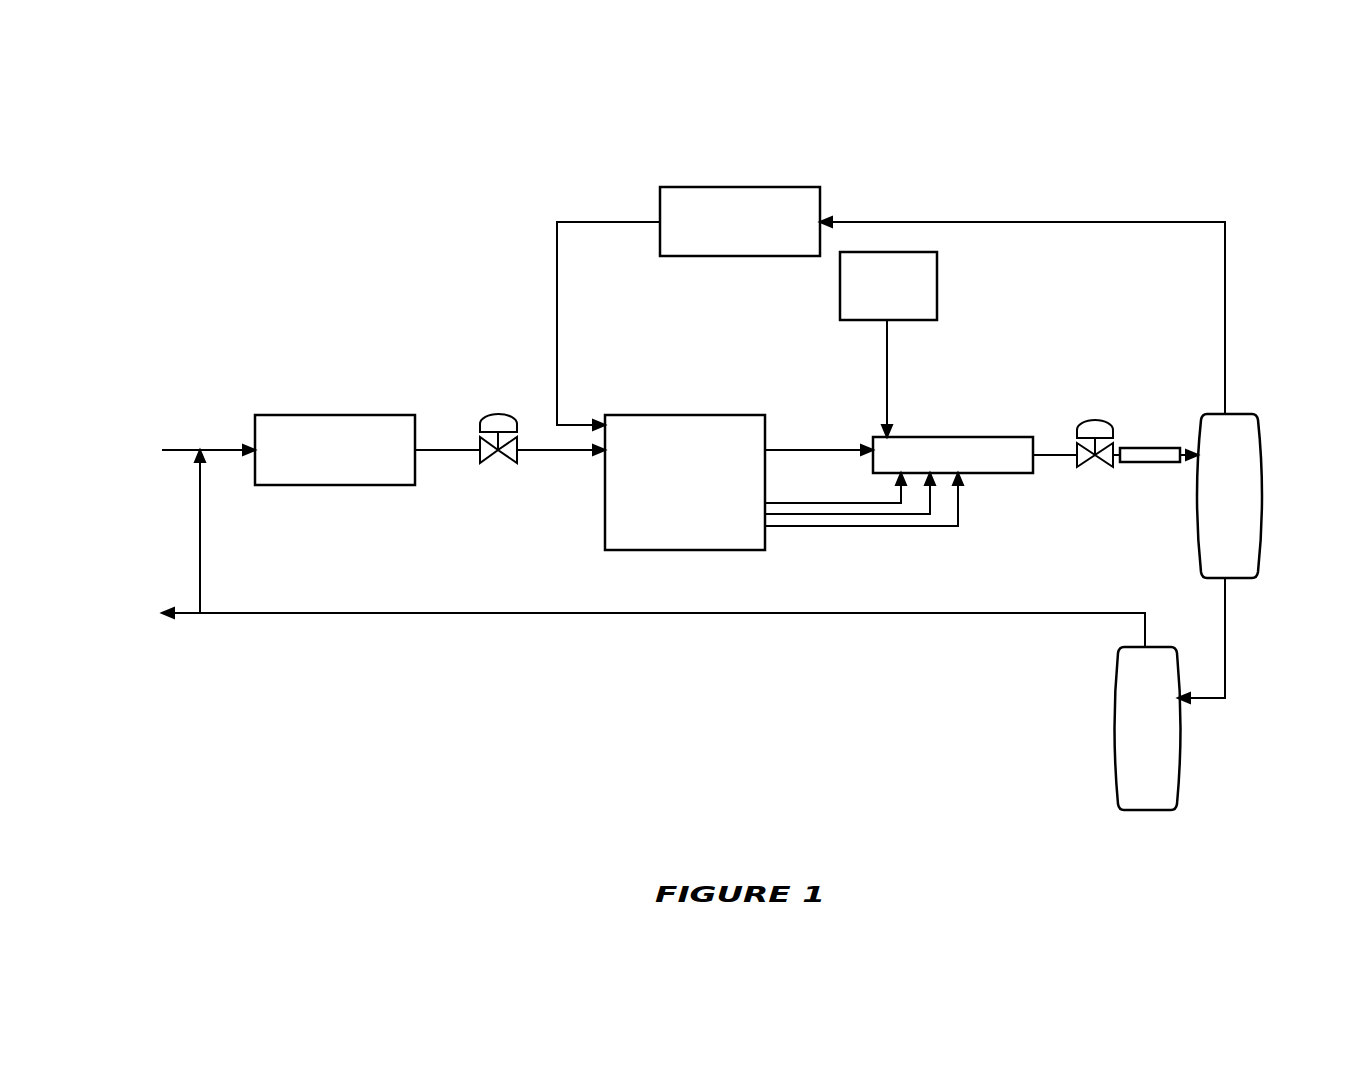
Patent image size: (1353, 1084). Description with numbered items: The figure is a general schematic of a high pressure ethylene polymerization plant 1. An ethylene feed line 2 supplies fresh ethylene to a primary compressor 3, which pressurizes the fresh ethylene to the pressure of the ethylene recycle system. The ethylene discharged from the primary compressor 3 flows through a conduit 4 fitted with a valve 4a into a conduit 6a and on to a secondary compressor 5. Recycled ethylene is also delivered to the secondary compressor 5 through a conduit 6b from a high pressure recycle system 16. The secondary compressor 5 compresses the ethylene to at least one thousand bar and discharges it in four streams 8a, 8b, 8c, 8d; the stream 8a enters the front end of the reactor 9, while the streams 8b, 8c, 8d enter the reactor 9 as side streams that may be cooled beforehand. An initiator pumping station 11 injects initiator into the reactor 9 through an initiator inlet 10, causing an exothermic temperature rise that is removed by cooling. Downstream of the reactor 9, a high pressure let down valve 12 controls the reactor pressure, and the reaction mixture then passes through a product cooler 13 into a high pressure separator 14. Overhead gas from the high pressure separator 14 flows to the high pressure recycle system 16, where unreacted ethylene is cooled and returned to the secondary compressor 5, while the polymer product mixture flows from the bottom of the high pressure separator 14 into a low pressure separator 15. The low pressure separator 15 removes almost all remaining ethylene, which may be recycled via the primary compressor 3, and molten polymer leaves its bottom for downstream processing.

The polymerization plant 1 is at (378, 168).
The ethylene feed line 2 is at (177, 448).
The primary compressor 3 is at (330, 473).
The conduit 4 is at (443, 448).
The valve 4a is at (498, 415).
The secondary compressor 5 is at (645, 527).
The conduit 6a is at (550, 450).
The conduit 6b is at (553, 302).
The stream 8a is at (822, 448).
The stream 8b is at (776, 503).
The stream 8c is at (818, 514).
The stream 8d is at (865, 526).
The reactor 9 is at (1008, 465).
The initiator inlet 10 is at (874, 378).
The initiator pumping station 11 is at (927, 302).
The high pressure let down valve 12 is at (1097, 432).
The product cooler 13 is at (1143, 455).
The high pressure separator 14 is at (1220, 522).
The low pressure separator 15 is at (1140, 690).
The high pressure recycle system 16 is at (710, 205).